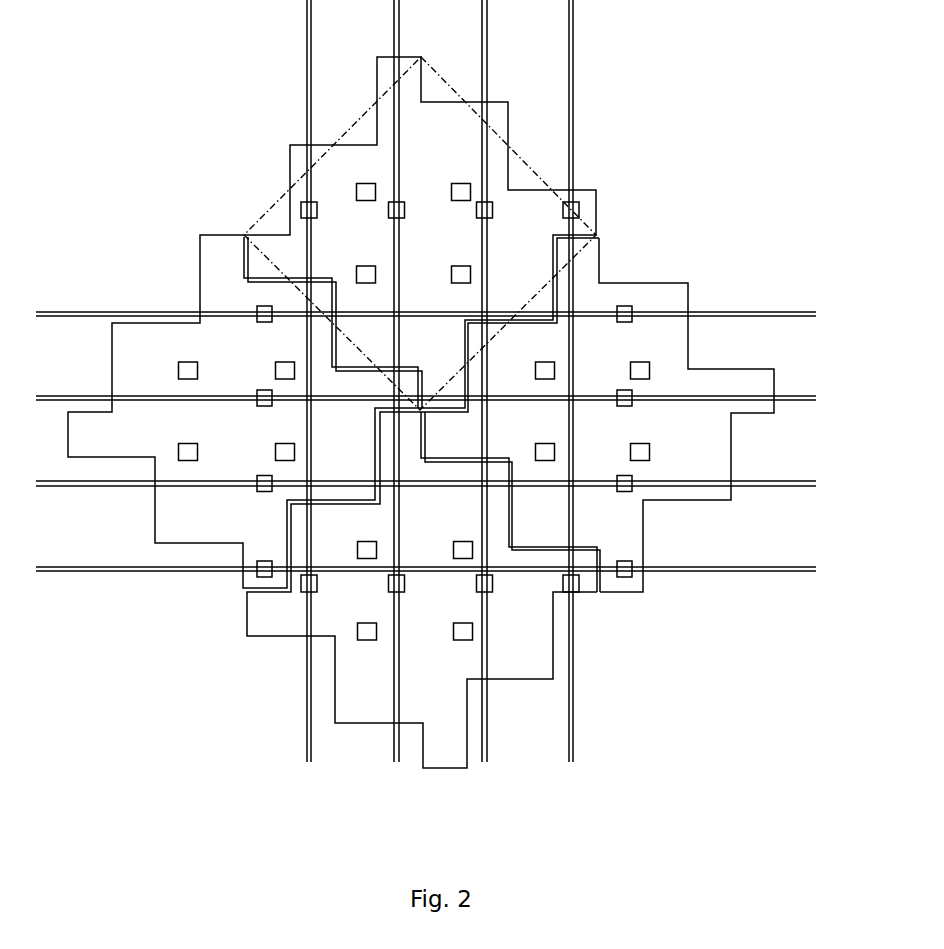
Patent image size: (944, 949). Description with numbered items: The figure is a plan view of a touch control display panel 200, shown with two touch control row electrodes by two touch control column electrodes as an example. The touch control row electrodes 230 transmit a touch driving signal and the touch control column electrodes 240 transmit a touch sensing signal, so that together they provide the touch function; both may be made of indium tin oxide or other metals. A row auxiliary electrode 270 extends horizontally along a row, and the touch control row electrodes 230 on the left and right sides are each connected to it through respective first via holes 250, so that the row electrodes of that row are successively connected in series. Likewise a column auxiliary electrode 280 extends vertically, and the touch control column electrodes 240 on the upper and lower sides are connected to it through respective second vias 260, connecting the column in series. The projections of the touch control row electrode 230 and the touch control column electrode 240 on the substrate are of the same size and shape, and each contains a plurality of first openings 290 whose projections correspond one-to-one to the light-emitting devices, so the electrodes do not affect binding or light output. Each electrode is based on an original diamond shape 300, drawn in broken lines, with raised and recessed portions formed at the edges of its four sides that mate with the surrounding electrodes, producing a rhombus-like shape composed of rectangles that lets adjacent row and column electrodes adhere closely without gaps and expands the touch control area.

The touch control display panel 200 is at (165, 54).
The touch control row electrode 230 is at (616, 290).
The touch control column electrode 240 is at (266, 616).
The first via hole 250 is at (625, 395).
The second via 260 is at (390, 578).
The row auxiliary electrode 270 is at (787, 397).
The column auxiliary electrode 280 is at (395, 728).
The first opening 290 is at (642, 453).
The diamond shape 300 is at (532, 170).